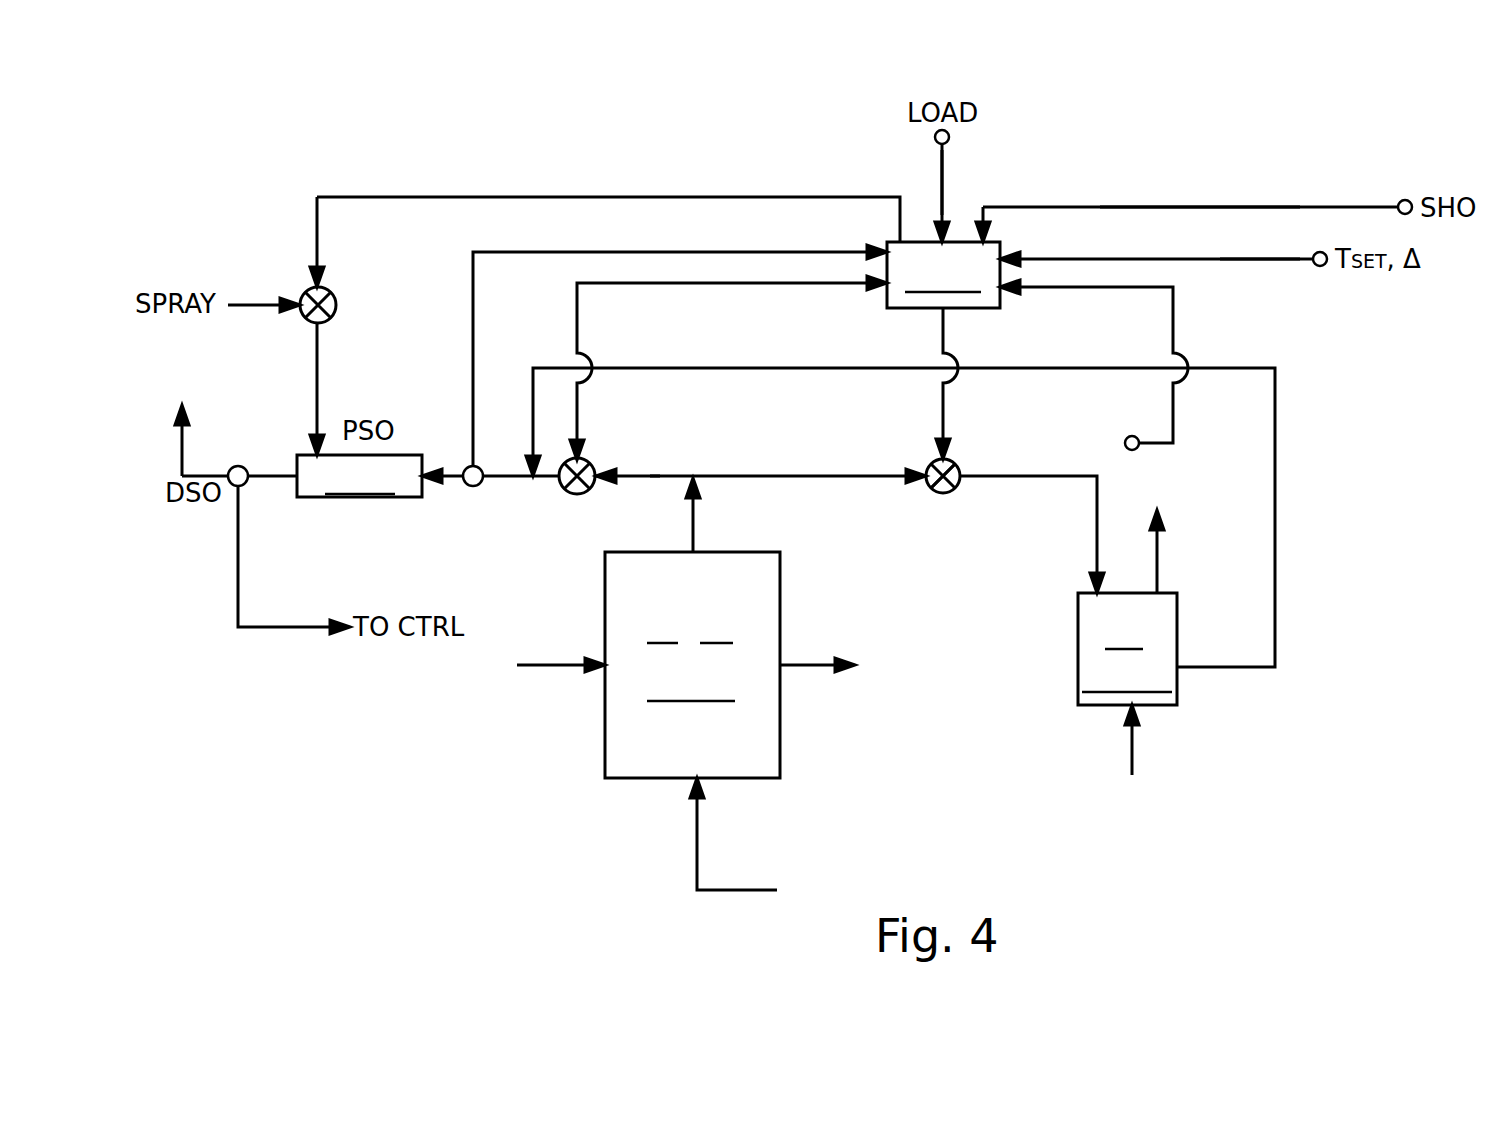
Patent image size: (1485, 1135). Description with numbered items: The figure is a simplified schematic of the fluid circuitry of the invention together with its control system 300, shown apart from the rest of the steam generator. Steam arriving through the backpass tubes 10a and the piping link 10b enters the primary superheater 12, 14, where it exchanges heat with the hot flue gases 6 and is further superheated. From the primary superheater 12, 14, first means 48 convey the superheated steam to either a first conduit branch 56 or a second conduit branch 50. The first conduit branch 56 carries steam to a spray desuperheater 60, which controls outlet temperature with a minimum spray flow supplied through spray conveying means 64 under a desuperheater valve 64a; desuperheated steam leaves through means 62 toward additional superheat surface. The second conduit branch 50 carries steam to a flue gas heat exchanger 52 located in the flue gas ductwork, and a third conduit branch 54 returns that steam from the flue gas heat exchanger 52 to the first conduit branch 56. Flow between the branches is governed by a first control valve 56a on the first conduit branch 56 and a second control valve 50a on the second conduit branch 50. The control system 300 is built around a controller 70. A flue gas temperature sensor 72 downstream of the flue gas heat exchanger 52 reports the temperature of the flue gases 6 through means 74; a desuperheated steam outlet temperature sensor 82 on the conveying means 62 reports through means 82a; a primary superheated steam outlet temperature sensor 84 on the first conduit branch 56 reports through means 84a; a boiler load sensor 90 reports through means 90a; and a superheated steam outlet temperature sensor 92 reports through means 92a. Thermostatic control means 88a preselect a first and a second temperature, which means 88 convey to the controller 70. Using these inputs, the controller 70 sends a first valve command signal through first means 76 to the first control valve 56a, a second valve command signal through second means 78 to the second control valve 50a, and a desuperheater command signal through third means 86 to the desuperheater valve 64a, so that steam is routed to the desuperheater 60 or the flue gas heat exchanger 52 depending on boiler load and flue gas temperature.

The flue gases 6 is at (578, 660).
The backpass tubes 10a is at (778, 834).
The piping link 10b is at (697, 843).
The primary superheater 12 is at (692, 665).
The primary superheater 14 is at (692, 665).
The first means for conveying superheated steam 48 is at (698, 505).
The second conduit branch 50 is at (795, 476).
The second control valve 50a is at (955, 490).
The flue gas heat exchanger 52 is at (1127, 649).
The third conduit branch 54 is at (630, 368).
The first conduit branch 56 is at (548, 482).
The first control valve 56a is at (590, 465).
The spray desuperheater 60 is at (297, 492).
The means for conveying desuperheated steam 62 is at (182, 447).
The spray conveying means 64 is at (317, 365).
The desuperheater valve 64a is at (310, 290).
The controller 70 is at (887, 245).
The flue gas temperature sensor 72 is at (1135, 436).
The means for conveying a flue gas temperature signal 74 is at (1133, 292).
The first means for conveying a first valve command signal 76 is at (577, 314).
The second means for conveying a second valve command signal 78 is at (945, 328).
The desuperheated steam outlet temperature sensor 82 is at (268, 428).
The means for conveying a desuperheated steam outlet temperature signal 82a is at (240, 560).
The primary superheated steam outlet temperature sensor 84 is at (466, 468).
The means for conveying a primary superheated steam outlet temperature signal 84a is at (472, 312).
The third means for conveying a desuperheater command signal 86 is at (670, 197).
The means for conveying preselected temperature signals 88 is at (1208, 259).
The thermostatic control means 88a is at (1318, 253).
The boiler load sensor 90 is at (935, 140).
The means for conveying a boiler load signal 90a is at (944, 172).
The superheated steam outlet temperature sensor 92 is at (1400, 202).
The means for conveying a superheated steam outlet temperature signal 92a is at (1210, 207).
The control system 300 is at (1242, 841).